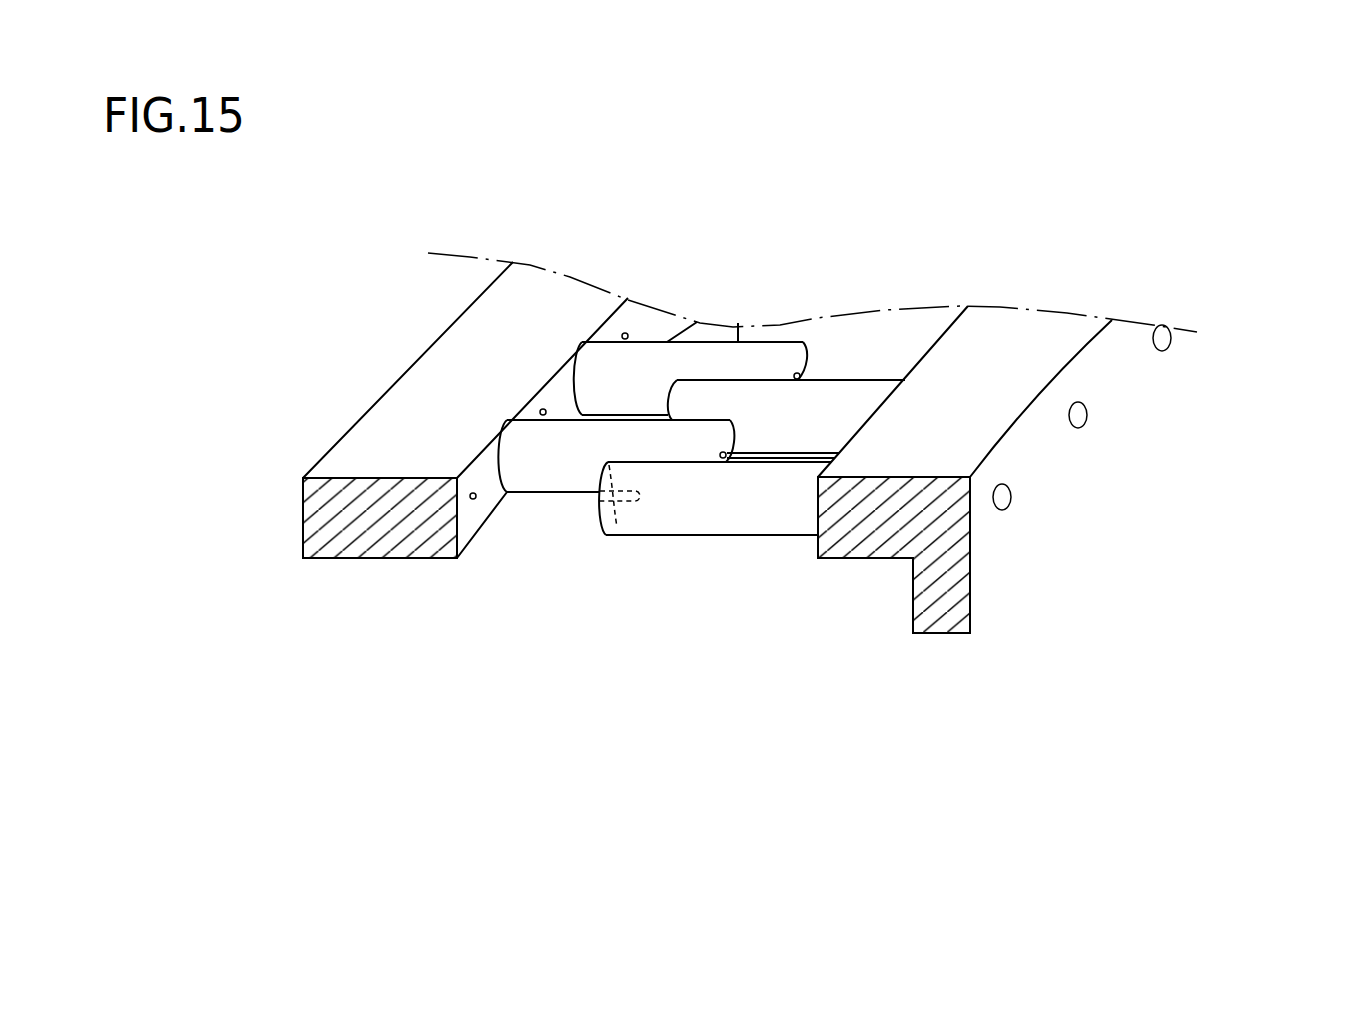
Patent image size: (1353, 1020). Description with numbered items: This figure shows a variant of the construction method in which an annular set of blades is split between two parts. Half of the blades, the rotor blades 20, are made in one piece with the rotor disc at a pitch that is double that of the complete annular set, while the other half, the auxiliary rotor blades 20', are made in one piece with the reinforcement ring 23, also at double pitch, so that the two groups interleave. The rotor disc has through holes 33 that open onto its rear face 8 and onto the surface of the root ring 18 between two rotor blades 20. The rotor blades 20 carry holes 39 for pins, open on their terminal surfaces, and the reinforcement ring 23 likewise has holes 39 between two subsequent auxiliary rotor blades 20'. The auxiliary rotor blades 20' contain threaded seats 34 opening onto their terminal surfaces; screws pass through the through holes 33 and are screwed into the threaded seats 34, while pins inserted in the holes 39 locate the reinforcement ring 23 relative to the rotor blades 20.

The rear face 8 is at (1067, 505).
The root ring 18 is at (933, 475).
The rotor blades 20 is at (825, 439).
The auxiliary rotor blades 20' is at (561, 437).
The reinforcement ring 23 is at (297, 512).
The through holes 33 is at (1170, 348).
The threaded seats 34 is at (800, 374).
The holes 39 is at (625, 333).